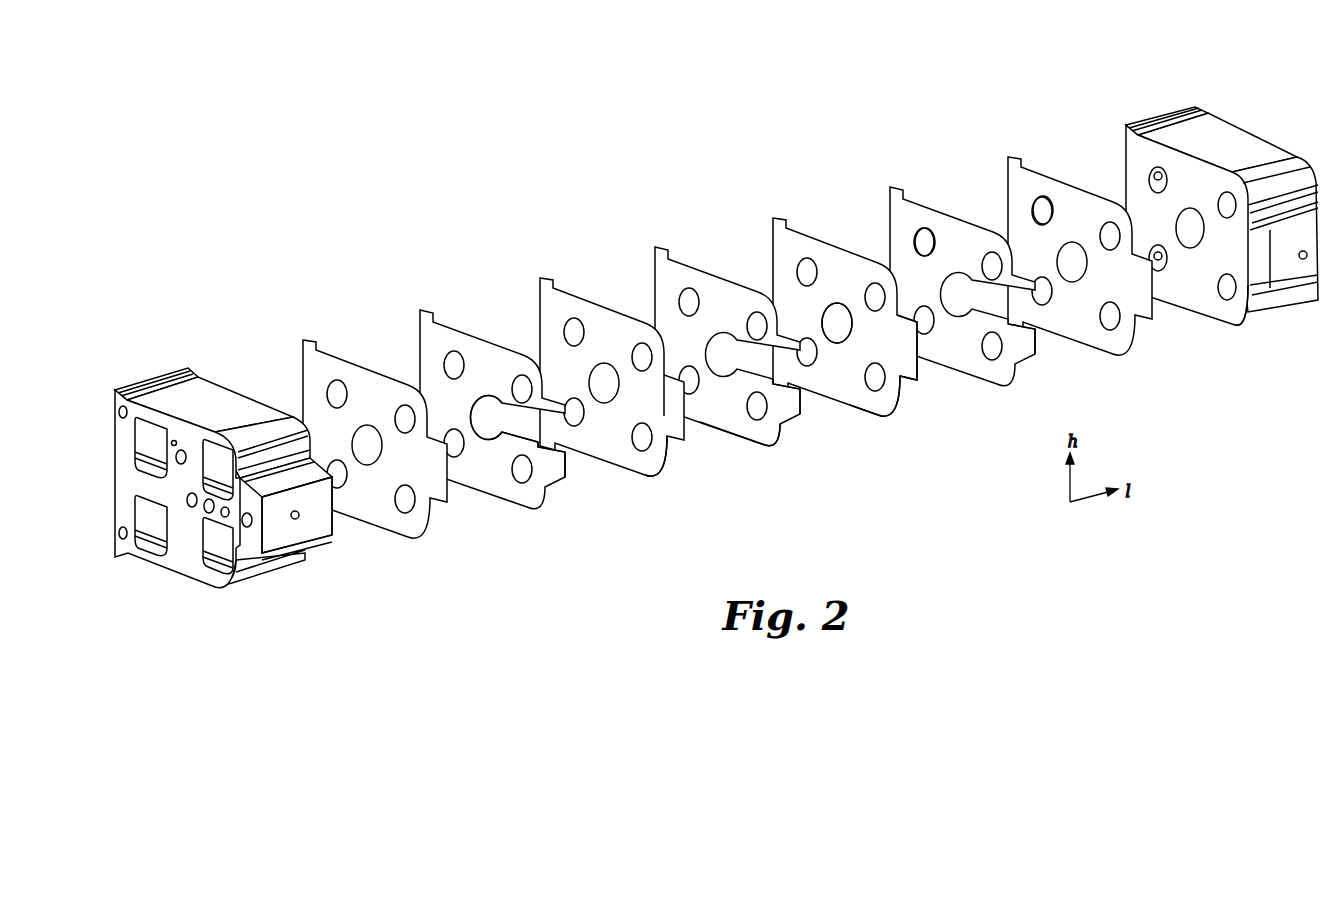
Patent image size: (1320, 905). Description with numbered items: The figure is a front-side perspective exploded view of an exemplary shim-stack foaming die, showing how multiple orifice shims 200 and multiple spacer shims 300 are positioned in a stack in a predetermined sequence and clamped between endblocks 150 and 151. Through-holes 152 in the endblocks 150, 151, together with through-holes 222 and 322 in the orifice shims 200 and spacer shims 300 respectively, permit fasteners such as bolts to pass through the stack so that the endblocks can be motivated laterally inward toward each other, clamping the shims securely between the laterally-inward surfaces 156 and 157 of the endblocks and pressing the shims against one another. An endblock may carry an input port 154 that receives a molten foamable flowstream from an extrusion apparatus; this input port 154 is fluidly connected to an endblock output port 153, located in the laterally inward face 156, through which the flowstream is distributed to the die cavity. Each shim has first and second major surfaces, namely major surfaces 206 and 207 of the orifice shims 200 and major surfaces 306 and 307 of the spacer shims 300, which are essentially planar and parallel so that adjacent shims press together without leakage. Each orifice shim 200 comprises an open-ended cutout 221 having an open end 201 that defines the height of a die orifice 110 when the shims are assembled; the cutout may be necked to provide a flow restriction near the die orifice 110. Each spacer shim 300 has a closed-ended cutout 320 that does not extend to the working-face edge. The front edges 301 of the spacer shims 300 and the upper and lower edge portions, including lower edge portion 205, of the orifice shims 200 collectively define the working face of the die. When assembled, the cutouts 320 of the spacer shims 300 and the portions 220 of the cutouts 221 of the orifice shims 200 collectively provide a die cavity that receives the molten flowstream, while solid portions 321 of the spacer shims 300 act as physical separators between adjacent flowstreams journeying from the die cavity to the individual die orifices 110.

The die orifice 110 is at (801, 386).
The endblock 150 is at (1237, 140).
The endblock 151 is at (207, 393).
The through-hole 152 is at (147, 522).
The endblock output port 153 is at (1196, 244).
The input port 154 is at (1128, 108).
The laterally-inward surface 156 is at (1237, 318).
The laterally-inward surface 157 is at (320, 560).
The orifice shim 200 is at (889, 176).
The open end 201 is at (565, 450).
The lower edge portion 205 is at (1036, 348).
The major surface 206 is at (777, 436).
The major surface 207 is at (741, 432).
The portion of cutout 220 is at (471, 406).
The open-ended cutout 221 is at (505, 413).
The through-hole 222 is at (926, 236).
The spacer shim 300 is at (1007, 146).
The front edge 301 is at (918, 366).
The major surface 306 is at (872, 408).
The major surface 307 is at (659, 468).
The closed-ended cutout 320 is at (836, 305).
The solid portion 321 is at (657, 408).
The through-hole 322 is at (1041, 204).